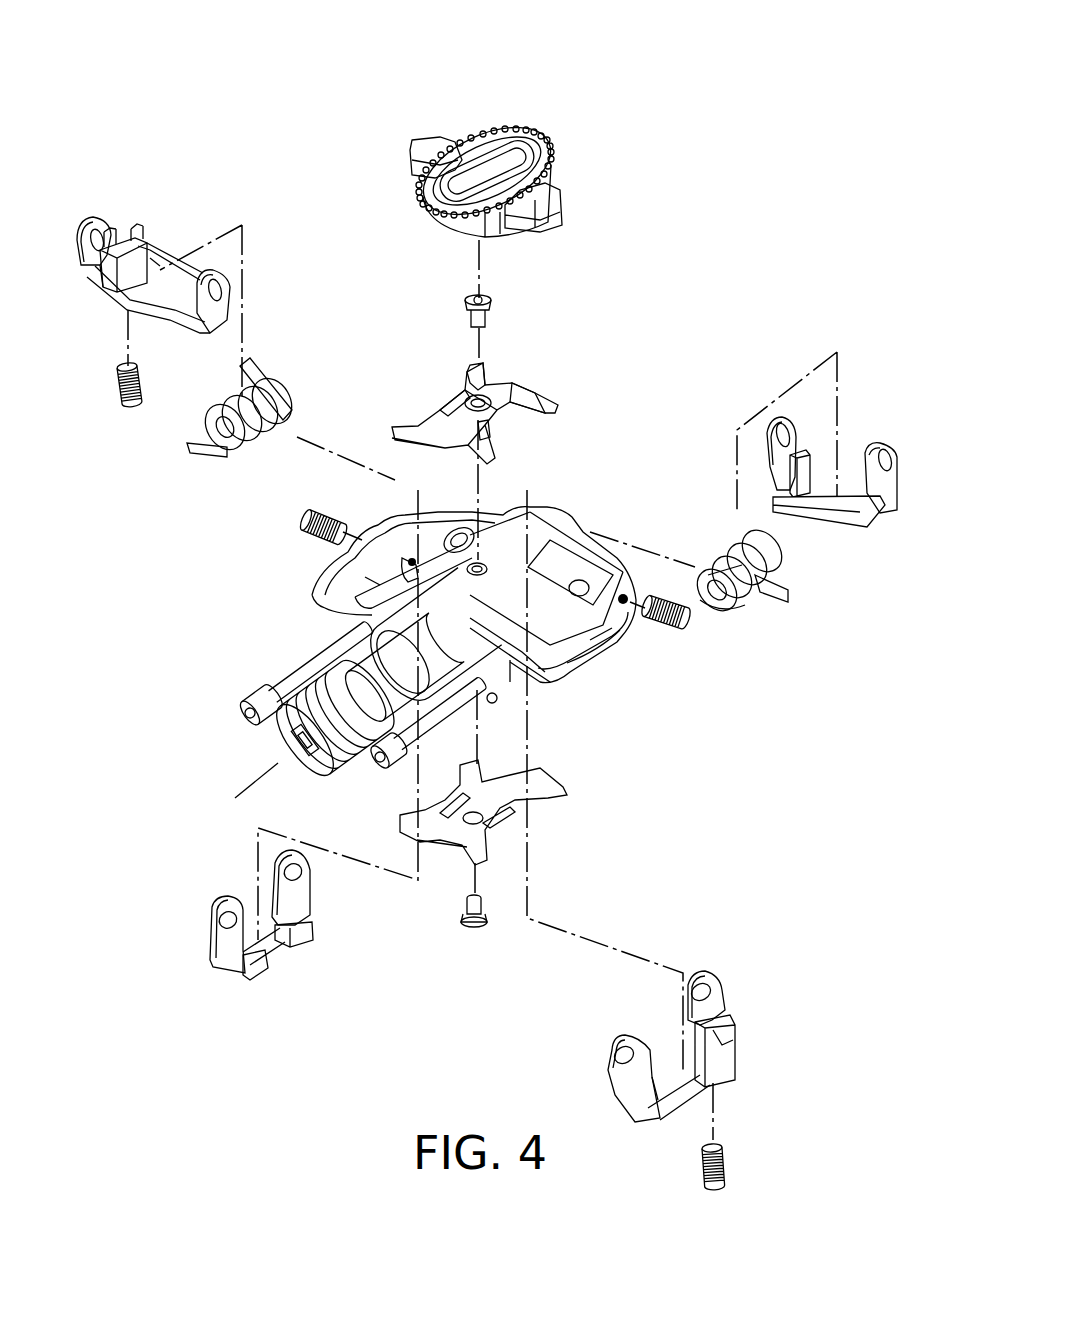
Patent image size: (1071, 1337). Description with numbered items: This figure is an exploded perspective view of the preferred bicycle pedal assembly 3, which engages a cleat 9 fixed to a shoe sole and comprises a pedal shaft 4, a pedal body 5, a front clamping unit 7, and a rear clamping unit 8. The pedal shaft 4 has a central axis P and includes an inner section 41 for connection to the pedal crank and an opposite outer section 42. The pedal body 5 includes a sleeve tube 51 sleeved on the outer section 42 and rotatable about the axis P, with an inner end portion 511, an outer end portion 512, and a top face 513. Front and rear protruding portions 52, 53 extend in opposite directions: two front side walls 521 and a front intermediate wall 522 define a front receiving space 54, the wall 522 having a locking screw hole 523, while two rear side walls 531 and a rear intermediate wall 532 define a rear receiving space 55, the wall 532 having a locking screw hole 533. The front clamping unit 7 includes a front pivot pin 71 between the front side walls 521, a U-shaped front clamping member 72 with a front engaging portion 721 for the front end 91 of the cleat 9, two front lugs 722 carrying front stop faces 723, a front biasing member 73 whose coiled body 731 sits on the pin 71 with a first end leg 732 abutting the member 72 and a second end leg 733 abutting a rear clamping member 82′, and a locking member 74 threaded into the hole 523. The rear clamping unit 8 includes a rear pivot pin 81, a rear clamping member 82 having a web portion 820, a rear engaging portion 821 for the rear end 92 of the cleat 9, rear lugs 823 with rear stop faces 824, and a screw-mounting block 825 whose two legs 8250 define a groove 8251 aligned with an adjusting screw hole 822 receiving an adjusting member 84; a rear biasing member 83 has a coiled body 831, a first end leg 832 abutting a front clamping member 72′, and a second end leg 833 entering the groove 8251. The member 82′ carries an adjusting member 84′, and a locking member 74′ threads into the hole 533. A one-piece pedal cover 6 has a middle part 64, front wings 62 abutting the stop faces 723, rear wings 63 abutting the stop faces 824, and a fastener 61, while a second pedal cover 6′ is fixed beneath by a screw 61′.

The bicycle pedal assembly 3 is at (458, 518).
The pedal shaft 4 is at (342, 693).
The inner section 41 is at (280, 733).
The outer section 42 is at (328, 603).
The pedal body 5 is at (458, 585).
The sleeve tube 51 is at (539, 492).
The inner end portion 511 is at (460, 690).
The outer end portion 512 is at (563, 517).
The top face 513 is at (490, 520).
The front protruding portion 52 is at (543, 657).
The front side walls 521 is at (513, 680).
The front intermediate wall 522 is at (603, 637).
The locking screw hole 523 is at (625, 595).
The rear protruding portion 53 is at (360, 577).
The rear side walls 531 is at (327, 603).
The rear intermediate wall 532 is at (403, 560).
The locking screw hole 533 is at (410, 560).
The front receiving space 54 is at (605, 640).
The rear receiving space 55 is at (373, 580).
The pedal cover 6 is at (493, 368).
The pedal cover 6′ is at (513, 827).
The fastener 61 is at (493, 300).
The screw 61′ is at (475, 933).
The front wings 62 is at (493, 440).
The rear wings 63 is at (413, 427).
The middle part 64 is at (465, 372).
The front clamping unit 7 is at (783, 433).
The front pivot pin 71 is at (490, 700).
The front clamping member 72 is at (824, 428).
The front clamping member 72′ is at (214, 945).
The front engaging portion 721 is at (862, 522).
The front lugs 722 is at (892, 445).
The front stop faces 723 is at (872, 460).
The front biasing member 73 is at (789, 579).
The coiled body 731 is at (753, 563).
The first end leg 732 is at (757, 608).
The second end leg 733 is at (780, 585).
The locking member 74 is at (680, 622).
The locking member 74′ is at (303, 522).
The rear clamping unit 8 is at (213, 284).
The rear pivot pin 81 is at (320, 643).
The rear clamping member 82 is at (199, 197).
The rear clamping member 82′ is at (730, 1012).
The web portion 820 is at (157, 263).
The rear engaging portion 821 is at (172, 320).
The adjusting screw hole 822 is at (137, 240).
The rear lugs 823 is at (222, 275).
The rear stop faces 824 is at (203, 303).
The screw-mounting block 825 is at (150, 250).
The legs 8250 is at (170, 243).
The groove 8251 is at (134, 226).
The rear biasing member 83 is at (243, 432).
The coiled body 831 is at (233, 403).
The first end leg 832 is at (195, 450).
The second end leg 833 is at (257, 373).
The adjusting member 84 is at (118, 390).
The adjusting member 84′ is at (720, 1160).
The cleat 9 is at (475, 141).
The front end 91 is at (560, 207).
The rear end 92 is at (417, 157).
The central axis P is at (260, 777).